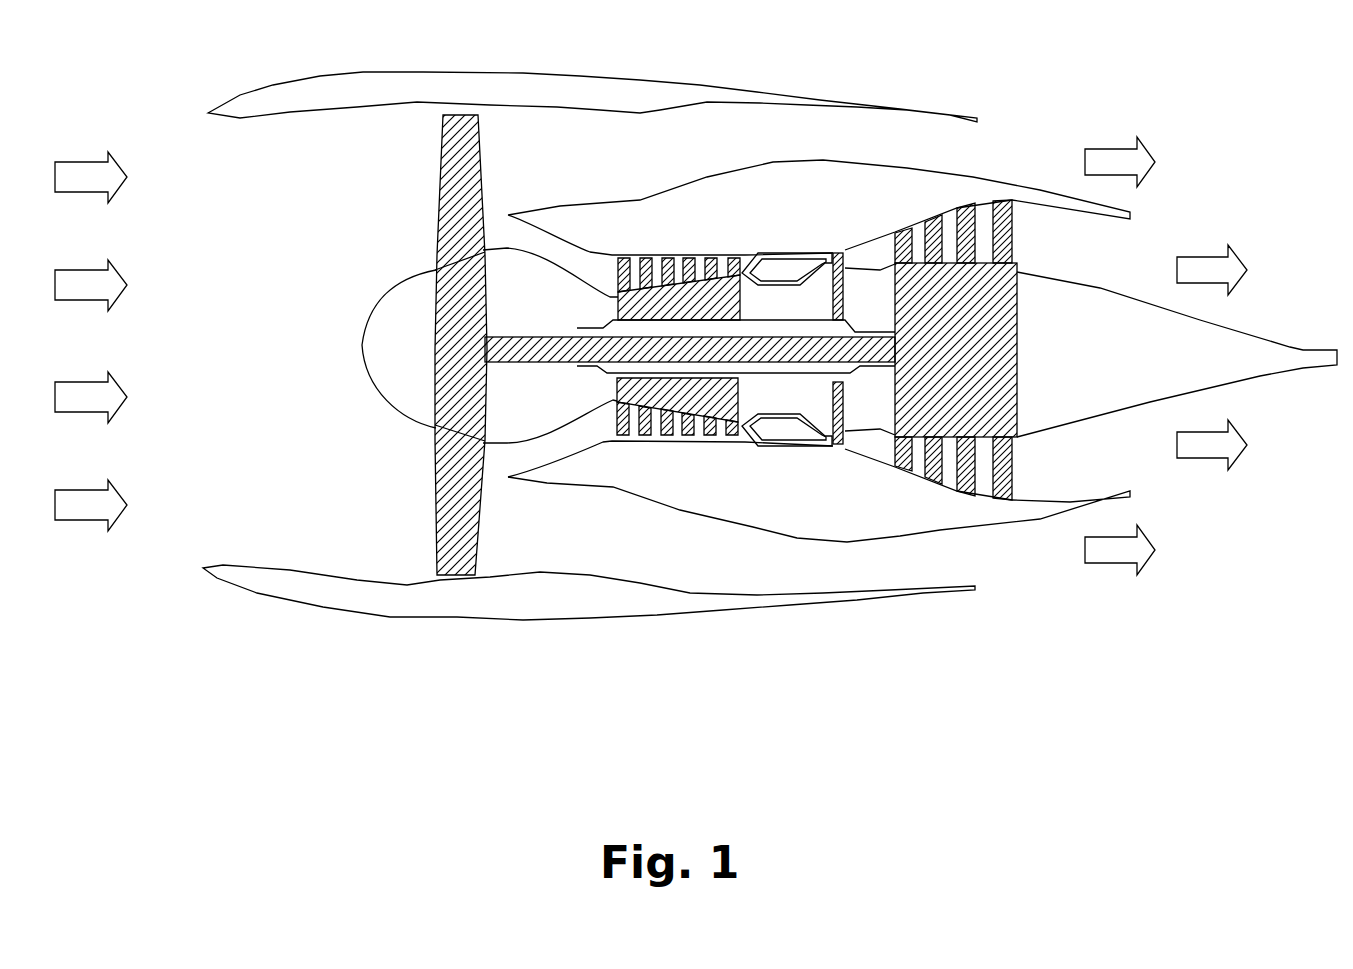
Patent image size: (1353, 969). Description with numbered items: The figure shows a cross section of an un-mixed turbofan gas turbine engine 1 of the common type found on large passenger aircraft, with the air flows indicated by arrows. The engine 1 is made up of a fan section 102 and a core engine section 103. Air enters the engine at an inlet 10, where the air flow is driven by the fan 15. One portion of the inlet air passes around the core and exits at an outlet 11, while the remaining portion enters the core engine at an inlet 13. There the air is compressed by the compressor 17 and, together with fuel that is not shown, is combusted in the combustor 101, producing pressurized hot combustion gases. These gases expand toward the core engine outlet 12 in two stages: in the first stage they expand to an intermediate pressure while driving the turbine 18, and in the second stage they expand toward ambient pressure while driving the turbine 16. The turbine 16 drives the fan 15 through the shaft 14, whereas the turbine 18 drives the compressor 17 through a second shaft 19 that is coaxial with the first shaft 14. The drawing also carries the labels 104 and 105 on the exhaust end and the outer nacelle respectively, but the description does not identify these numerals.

The engine 1 is at (960, 665).
The inlet 10 is at (207, 333).
The outlet 11 is at (995, 140).
The core engine outlet 12 is at (1140, 255).
The inlet 13 is at (510, 233).
The shaft 14 is at (558, 337).
The fan 15 is at (453, 187).
The turbine 16 is at (1013, 237).
The compressor 17 is at (685, 258).
The turbine 18 is at (840, 253).
The second shaft 19 is at (758, 320).
The combustor 101 is at (772, 265).
The fan section 102 is at (423, 460).
The core engine section 103 is at (965, 517).
The exhaust nozzle 104 is at (1257, 353).
The nacelle 105 is at (747, 97).